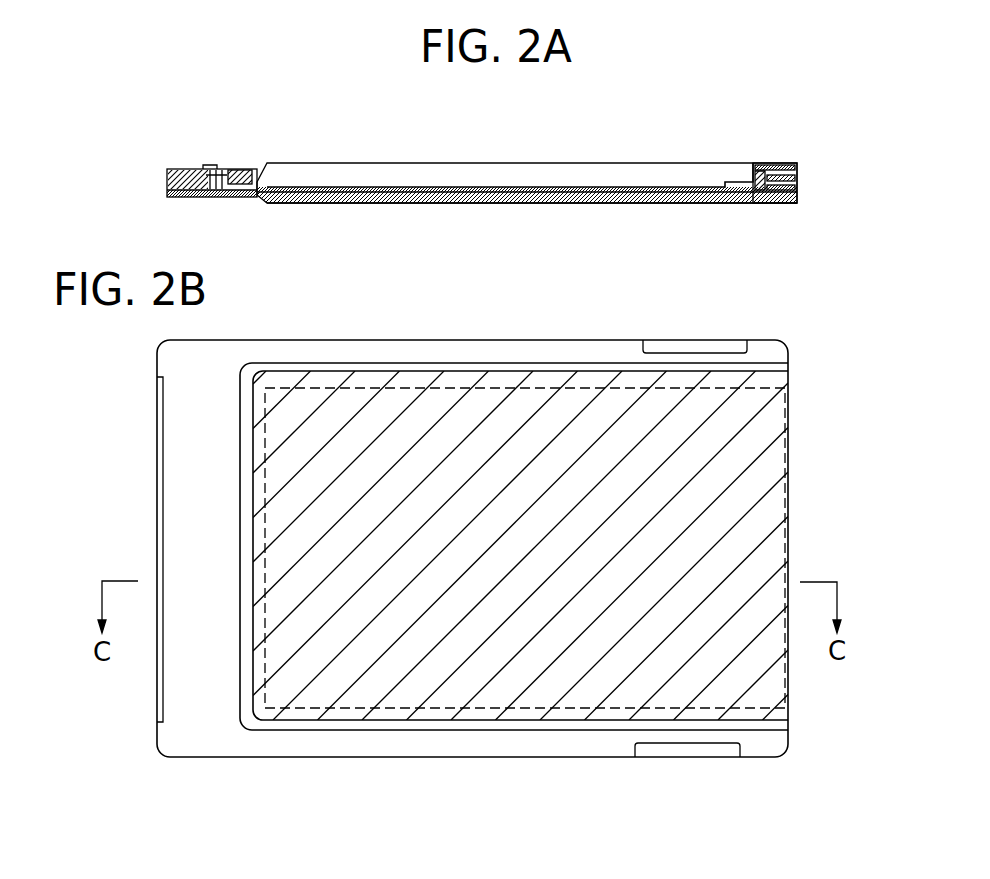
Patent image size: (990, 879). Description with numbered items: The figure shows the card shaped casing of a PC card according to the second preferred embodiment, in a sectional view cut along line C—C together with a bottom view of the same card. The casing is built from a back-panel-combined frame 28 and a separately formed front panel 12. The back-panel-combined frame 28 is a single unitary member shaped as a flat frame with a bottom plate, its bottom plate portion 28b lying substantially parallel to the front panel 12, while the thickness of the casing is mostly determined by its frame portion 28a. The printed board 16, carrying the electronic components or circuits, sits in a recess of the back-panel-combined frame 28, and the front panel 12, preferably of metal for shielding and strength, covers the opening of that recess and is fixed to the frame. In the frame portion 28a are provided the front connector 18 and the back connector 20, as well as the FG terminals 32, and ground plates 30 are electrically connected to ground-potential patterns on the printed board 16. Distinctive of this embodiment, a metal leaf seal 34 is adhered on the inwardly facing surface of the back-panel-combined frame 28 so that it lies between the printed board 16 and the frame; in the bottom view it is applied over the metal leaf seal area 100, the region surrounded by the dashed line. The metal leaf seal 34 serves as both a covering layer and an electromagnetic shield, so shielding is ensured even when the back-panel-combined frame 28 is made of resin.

In FIG. 2A, the front panel 12 is at (410, 162).
In FIG. 2A, the printed board 16 is at (530, 187).
In FIG. 2A, the front connector 18 is at (167, 182).
In FIG. 2B, the front connector 18 is at (157, 522).
In FIG. 2A, the back connector 20 is at (755, 171).
In FIG. 2A, the back-panel-combined frame 28 is at (370, 203).
In FIG. 2B, the back-panel-combined frame 28 is at (490, 340).
In FIG. 2A, the frame portion 28a is at (797, 166).
In FIG. 2A, the bottom plate portion 28b is at (557, 203).
In FIG. 2A, the ground plates 30 is at (205, 168).
In FIG. 2B, the FG terminals 32 is at (698, 341).
In FIG. 2A, the metal leaf seal 34 is at (645, 203).
In FIG. 2B, the metal leaf seal area 100 is at (533, 710).